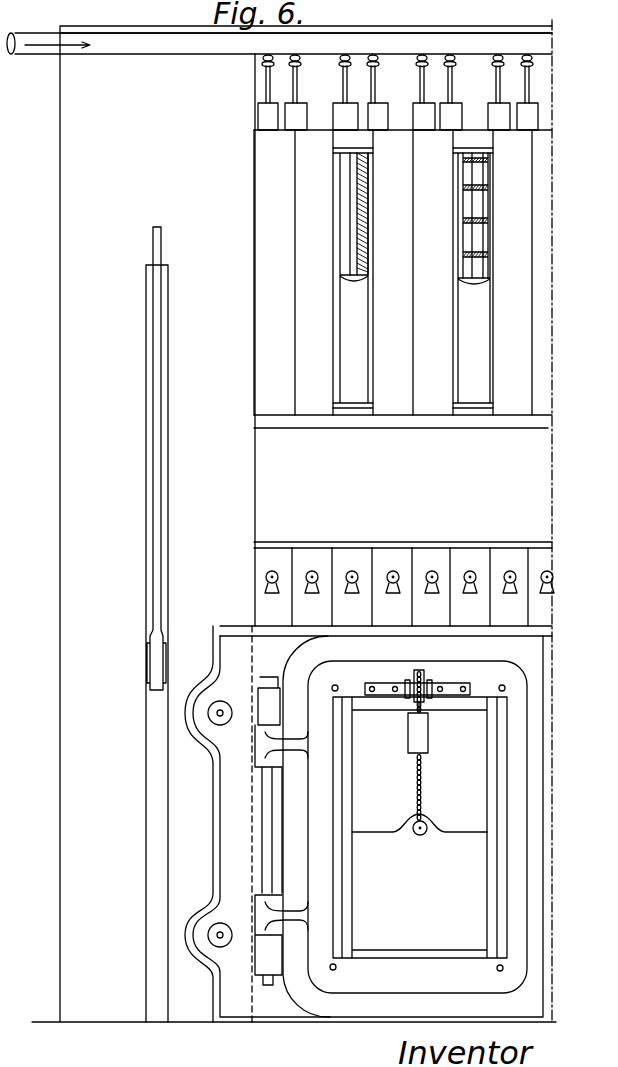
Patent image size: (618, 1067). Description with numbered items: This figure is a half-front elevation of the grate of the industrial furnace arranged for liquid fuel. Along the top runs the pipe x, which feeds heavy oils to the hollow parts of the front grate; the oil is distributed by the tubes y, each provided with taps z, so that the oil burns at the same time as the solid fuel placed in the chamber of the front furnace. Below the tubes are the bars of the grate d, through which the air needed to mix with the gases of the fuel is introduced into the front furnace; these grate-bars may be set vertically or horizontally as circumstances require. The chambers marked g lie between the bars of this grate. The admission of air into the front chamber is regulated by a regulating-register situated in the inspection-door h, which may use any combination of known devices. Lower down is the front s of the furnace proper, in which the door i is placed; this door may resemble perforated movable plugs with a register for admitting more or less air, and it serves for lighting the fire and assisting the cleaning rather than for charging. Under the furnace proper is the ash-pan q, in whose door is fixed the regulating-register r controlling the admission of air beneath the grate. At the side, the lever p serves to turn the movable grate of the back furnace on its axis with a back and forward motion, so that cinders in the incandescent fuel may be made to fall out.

The pipe x is at (279, 43).
The taps z is at (397, 63).
The tubes y is at (404, 84).
The grate d is at (326, 215).
The compartment g is at (398, 272).
The inspection-door h is at (413, 272).
The levers p is at (164, 624).
The door i is at (409, 587).
The ash-pan q is at (334, 810).
The regulating-register r is at (420, 815).
The front s is at (257, 824).